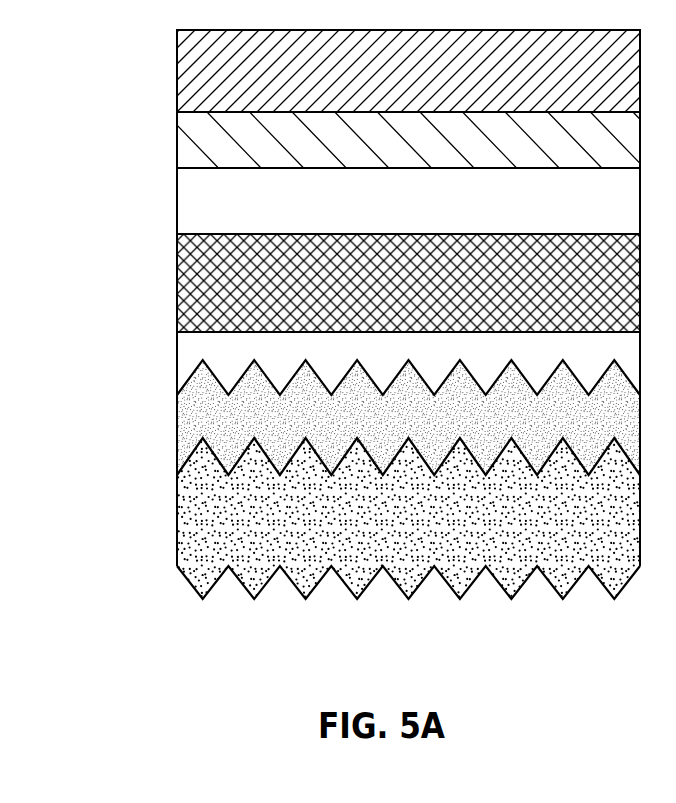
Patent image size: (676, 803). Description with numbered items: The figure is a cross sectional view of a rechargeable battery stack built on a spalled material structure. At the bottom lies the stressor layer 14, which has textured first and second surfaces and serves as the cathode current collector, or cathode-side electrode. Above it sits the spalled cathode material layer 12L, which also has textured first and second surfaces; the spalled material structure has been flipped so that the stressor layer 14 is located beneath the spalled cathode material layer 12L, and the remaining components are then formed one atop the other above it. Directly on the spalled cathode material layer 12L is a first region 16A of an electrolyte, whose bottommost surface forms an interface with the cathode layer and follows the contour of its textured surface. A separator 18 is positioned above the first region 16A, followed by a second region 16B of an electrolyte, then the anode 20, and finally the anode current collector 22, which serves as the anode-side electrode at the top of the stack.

The anode current collector 22 is at (420, 83).
The anode 20 is at (420, 154).
The second region of an electrolyte 16B is at (432, 212).
The separator 18 is at (420, 294).
The first region of an electrolyte 16A is at (186, 350).
The spalled cathode material layer 12L is at (430, 427).
The stressor layer 14 is at (420, 533).